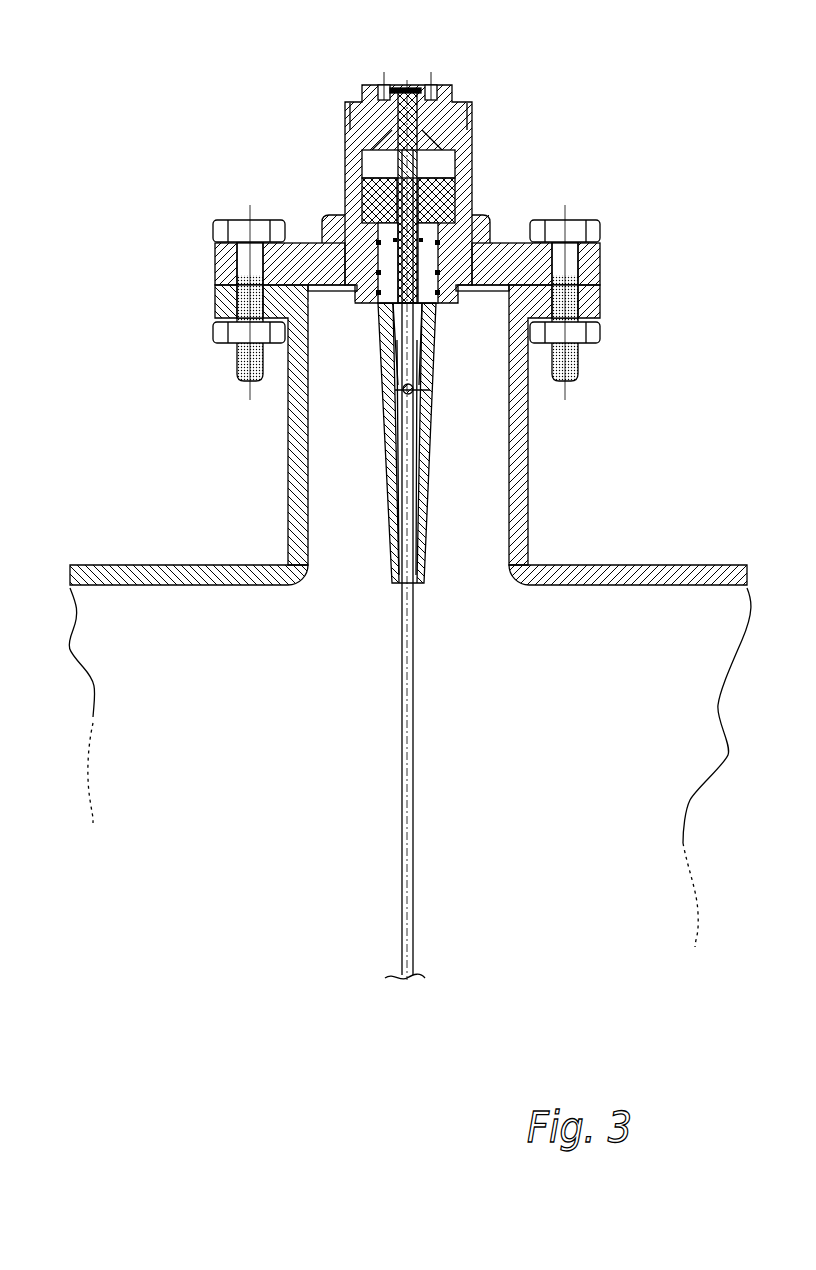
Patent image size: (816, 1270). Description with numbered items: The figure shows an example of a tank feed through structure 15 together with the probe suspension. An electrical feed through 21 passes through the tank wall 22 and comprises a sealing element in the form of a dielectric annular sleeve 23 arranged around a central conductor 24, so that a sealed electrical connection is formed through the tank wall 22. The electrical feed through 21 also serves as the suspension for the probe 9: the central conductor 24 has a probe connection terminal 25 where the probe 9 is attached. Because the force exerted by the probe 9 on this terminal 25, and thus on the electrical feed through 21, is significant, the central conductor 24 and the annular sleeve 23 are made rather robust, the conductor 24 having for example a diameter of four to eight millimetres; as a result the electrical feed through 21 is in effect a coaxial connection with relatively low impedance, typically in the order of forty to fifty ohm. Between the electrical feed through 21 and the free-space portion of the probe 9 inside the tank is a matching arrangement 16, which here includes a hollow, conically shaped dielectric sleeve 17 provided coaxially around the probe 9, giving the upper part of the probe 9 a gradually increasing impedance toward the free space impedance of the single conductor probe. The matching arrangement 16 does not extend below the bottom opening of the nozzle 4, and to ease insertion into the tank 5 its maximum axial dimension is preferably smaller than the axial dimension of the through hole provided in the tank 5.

The nozzle 4 is at (528, 460).
The tank 5 is at (645, 567).
The probe 9 is at (415, 927).
The feed through structure 15 is at (431, 170).
The matching arrangement 16 is at (448, 520).
The conically shaped dielectric sleeve 17 is at (433, 328).
The electrical feed through 21 is at (347, 322).
The tank wall 22 is at (507, 248).
The dielectric annular sleeve 23 is at (372, 204).
The central conductor 24 is at (390, 160).
The probe connection terminal 25 is at (400, 390).